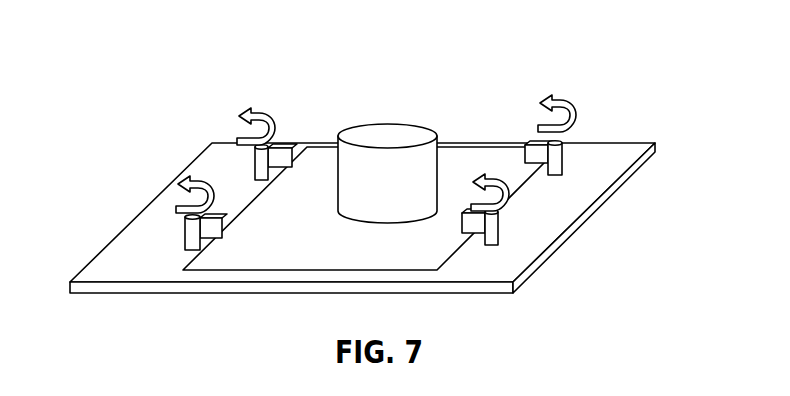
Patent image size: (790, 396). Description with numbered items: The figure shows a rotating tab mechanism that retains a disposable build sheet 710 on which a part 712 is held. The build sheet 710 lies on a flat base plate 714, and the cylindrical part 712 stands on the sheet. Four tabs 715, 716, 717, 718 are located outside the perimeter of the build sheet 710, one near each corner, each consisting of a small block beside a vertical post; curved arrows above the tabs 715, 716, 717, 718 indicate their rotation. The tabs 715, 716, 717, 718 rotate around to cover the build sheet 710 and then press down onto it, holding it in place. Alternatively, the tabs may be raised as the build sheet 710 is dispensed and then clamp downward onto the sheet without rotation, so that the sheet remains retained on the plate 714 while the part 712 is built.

The build sheet 710 is at (507, 163).
The part 712 is at (392, 136).
The base plate 714 is at (467, 267).
The tab 715 is at (562, 167).
The tab 716 is at (500, 234).
The tab 717 is at (182, 236).
The tab 718 is at (256, 165).